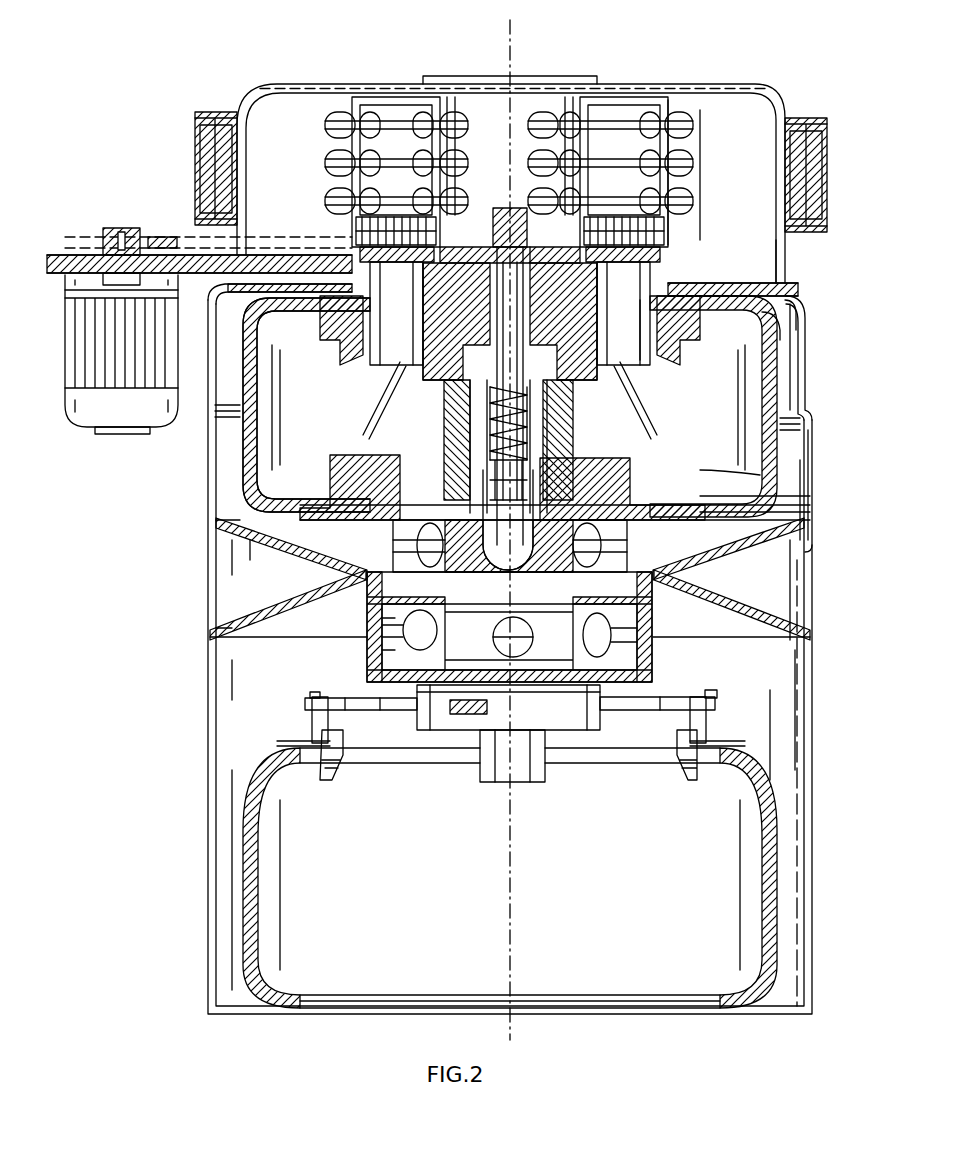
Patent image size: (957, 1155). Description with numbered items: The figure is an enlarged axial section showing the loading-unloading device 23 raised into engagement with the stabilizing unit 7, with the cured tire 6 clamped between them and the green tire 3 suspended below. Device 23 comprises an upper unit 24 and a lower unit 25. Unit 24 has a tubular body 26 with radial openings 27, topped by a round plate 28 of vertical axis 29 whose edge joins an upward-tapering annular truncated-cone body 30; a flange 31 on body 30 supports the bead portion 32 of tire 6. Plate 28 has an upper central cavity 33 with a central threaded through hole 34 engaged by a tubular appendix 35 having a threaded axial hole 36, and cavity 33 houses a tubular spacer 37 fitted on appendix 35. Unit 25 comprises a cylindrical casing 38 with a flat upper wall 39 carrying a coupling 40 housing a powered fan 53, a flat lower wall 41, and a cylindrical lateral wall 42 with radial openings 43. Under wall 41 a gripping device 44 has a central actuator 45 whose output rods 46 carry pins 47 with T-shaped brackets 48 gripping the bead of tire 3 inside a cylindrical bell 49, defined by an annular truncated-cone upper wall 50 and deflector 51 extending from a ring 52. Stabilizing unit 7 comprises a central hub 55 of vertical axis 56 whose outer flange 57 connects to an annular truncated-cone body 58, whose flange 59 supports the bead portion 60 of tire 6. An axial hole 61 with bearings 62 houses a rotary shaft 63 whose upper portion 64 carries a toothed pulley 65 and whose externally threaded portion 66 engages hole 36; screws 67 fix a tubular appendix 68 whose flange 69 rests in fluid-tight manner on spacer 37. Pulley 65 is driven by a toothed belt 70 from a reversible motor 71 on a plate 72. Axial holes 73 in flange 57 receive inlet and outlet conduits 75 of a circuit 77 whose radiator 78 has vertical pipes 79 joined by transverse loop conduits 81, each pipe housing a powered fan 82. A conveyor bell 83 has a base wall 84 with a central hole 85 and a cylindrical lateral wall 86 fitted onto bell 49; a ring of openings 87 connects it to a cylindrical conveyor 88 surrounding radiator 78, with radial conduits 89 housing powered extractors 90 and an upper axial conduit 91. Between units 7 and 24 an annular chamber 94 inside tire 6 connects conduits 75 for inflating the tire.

The tire 3 is at (790, 900).
The tire 6 is at (787, 404).
The stabilizing unit 7 is at (796, 268).
The loading-unloading device 23 is at (202, 630).
The upper unit 24 is at (812, 470).
The lower unit 25 is at (782, 712).
The tubular body 26 is at (692, 542).
The radial openings 27 is at (424, 545).
The round plate 28 is at (802, 548).
The vertical axis 29 is at (510, 820).
The annular truncated-cone body 30 is at (682, 472).
The flange 31 is at (792, 512).
The bead portion 32 is at (792, 496).
The upper central cavity 33 is at (548, 462).
The central threaded through hole 34 is at (535, 432).
The tubular appendix 35 is at (483, 385).
The threaded axial hole 36 is at (478, 420).
The tubular spacer 37 is at (509, 521).
The cylindrical casing 38 is at (655, 672).
The flat upper wall 39 is at (530, 642).
The coupling 40 is at (692, 602).
The flat lower wall 41 is at (386, 706).
The cylindrical lateral wall 42 is at (367, 674).
The radial openings 43 is at (414, 632).
The gripping device 44 is at (752, 792).
The central actuator 45 is at (545, 738).
The output rods 46 is at (462, 712).
The pin 47 is at (312, 720).
The T-shaped bracket 48 is at (336, 776).
The cylindrical bell 49 is at (813, 856).
The annular truncated-cone upper wall 50 is at (262, 535).
The annular truncated-cone deflector 51 is at (322, 614).
The ring 52 is at (360, 578).
The powered fan 53 is at (509, 637).
The central hub 55 is at (630, 372).
The vertical axis 56 is at (510, 62).
The outer flange 57 is at (690, 332).
The annular truncated-cone body 58 is at (692, 362).
The flange 59 is at (788, 322).
The bead portion 60 is at (792, 348).
The axial hole 61 is at (572, 275).
The bearings 62 is at (585, 260).
The rotary shaft 63 is at (540, 255).
The portion 64 is at (545, 150).
The toothed pulley 65 is at (504, 210).
The externally threaded portion 66 is at (470, 455).
The screws 67 is at (392, 397).
The tubular appendix 68 is at (548, 400).
The flange 69 is at (362, 462).
The toothed belt 70 is at (185, 235).
The reversible motor 71 is at (95, 415).
The plate 72 is at (60, 257).
The axial holes 73 is at (378, 345).
The inlet and outlet conduits 75 is at (396, 370).
The circuit 77 is at (695, 182).
The radiator 78 is at (692, 140).
The vertical pipes 79 is at (395, 125).
The transverse loop conduits 81 is at (452, 150).
The powered fan 82 is at (356, 230).
The conveyor bell 83 is at (814, 449).
The base wall 84 is at (802, 318).
The central hole 85 is at (332, 332).
The cylindrical lateral wall 86 is at (816, 542).
The openings 87 is at (228, 288).
The cylindrical conveyor 88 is at (262, 84).
The radial conduits 89 is at (213, 112).
The powered extractor 90 is at (198, 133).
The upper axial conduit 91 is at (441, 76).
The annular chamber 94 is at (255, 438).